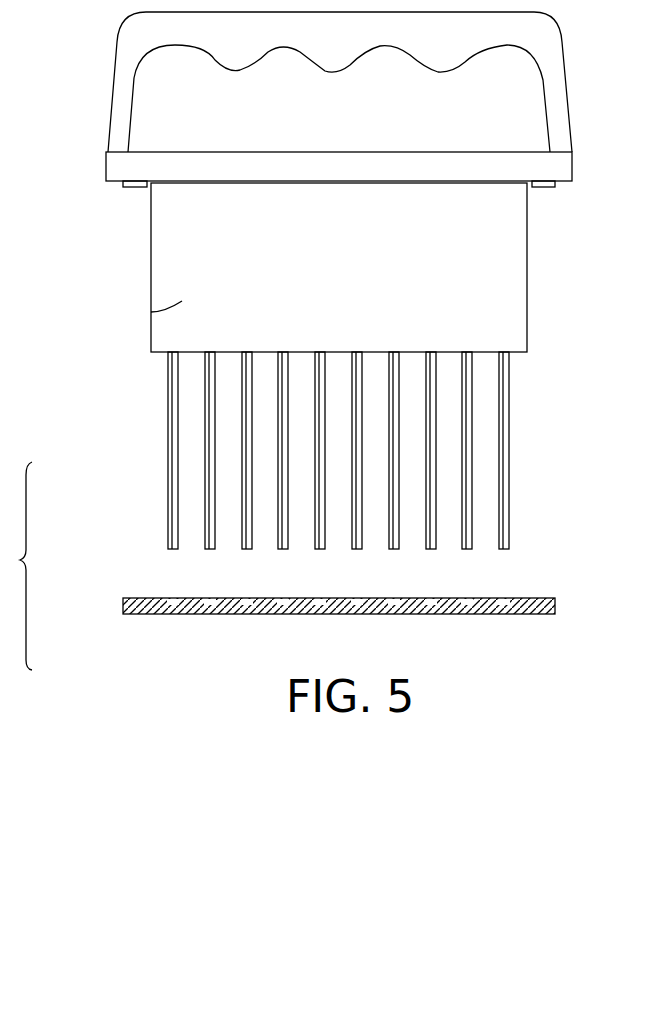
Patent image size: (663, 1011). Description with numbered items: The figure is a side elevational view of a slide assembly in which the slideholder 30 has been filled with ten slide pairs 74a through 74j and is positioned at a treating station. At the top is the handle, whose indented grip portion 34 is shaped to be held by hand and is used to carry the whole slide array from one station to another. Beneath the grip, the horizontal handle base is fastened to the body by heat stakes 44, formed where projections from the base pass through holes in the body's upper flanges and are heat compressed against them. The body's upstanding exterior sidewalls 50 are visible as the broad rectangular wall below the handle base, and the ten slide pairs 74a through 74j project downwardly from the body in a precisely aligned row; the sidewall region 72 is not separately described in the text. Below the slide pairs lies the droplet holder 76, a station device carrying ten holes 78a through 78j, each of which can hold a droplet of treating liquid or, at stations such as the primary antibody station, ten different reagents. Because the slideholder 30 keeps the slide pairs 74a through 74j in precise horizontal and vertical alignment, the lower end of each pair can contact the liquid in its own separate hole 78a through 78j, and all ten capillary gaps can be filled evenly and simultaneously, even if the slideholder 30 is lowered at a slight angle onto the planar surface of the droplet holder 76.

The slideholder 30 is at (572, 182).
The grip portion 34 is at (117, 38).
The heat stakes 44 is at (124, 183).
The exterior sidewalls 50 is at (151, 312).
The housing side wall 72 is at (151, 258).
The slide pair 74a is at (168, 452).
The slide pair 74j is at (509, 452).
The droplet holder 76 is at (128, 614).
The hole 78a is at (168, 598).
The hole 78j is at (507, 598).